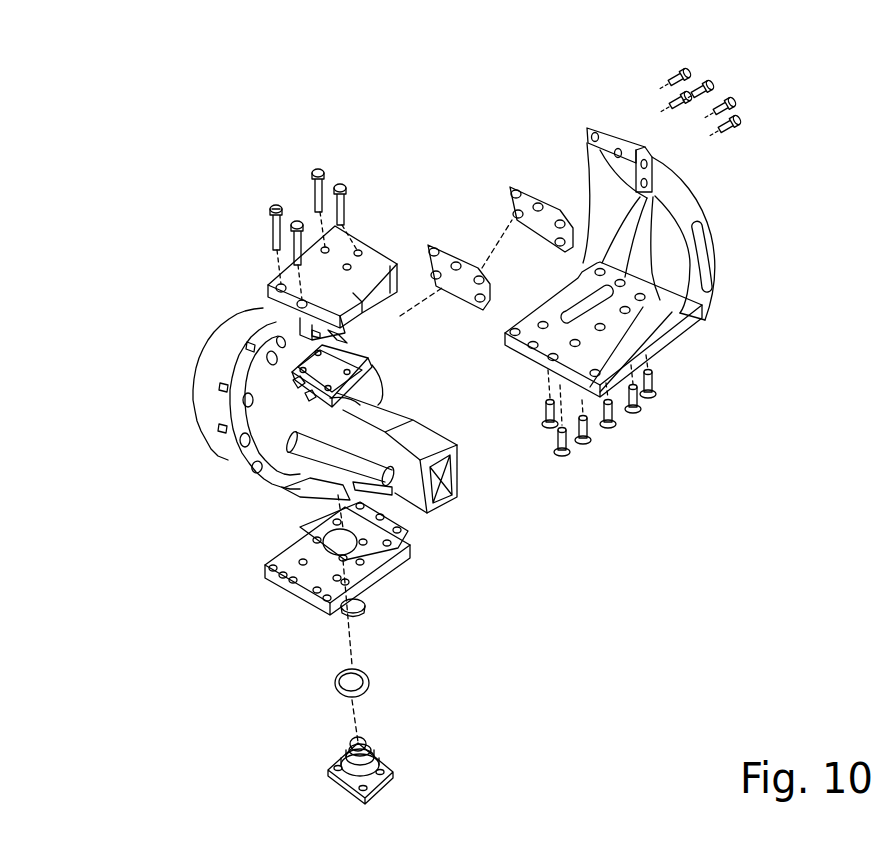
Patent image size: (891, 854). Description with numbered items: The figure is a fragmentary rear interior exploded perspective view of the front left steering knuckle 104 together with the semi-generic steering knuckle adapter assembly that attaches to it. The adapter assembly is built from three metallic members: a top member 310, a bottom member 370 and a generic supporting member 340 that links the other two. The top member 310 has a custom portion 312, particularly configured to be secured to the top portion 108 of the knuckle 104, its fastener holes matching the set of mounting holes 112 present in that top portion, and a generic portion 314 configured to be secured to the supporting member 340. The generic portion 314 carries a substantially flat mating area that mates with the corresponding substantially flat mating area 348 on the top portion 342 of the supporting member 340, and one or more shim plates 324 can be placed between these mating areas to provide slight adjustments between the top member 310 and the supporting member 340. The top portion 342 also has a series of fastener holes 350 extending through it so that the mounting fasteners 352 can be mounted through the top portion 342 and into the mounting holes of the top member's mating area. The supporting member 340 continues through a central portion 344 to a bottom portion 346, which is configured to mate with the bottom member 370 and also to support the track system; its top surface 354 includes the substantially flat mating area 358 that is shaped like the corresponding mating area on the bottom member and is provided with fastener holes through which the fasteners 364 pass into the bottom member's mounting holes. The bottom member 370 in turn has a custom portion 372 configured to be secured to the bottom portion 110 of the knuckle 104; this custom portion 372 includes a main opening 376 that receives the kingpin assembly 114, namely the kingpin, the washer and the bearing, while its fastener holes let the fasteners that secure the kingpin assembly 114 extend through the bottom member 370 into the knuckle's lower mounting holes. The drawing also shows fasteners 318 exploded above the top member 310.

The steering knuckle 104 is at (263, 418).
The top portion of the steering knuckle 108 is at (362, 354).
The bottom portion of the steering knuckle 110 is at (290, 497).
The mounting holes 112 is at (358, 346).
The kingpin assembly 114 is at (370, 597).
The top member 310 is at (232, 239).
The custom portion of the top member 312 is at (268, 294).
The generic portion of the top member 314 is at (402, 245).
The fasteners 318 is at (330, 155).
The shim plates 324 is at (515, 186).
The supporting member 340 is at (774, 319).
The top portion of the supporting member 342 is at (675, 165).
The central portion of the supporting member 344 is at (712, 212).
The bottom portion of the supporting member 346 is at (683, 340).
The mating area 348 is at (640, 178).
The fastener holes 350 is at (612, 170).
The mounting fasteners 352 is at (770, 118).
The top surface 354 is at (506, 354).
The mating area 358 is at (560, 320).
The fasteners 364 is at (558, 478).
The bottom member 370 is at (395, 582).
The custom portion of the bottom member 372 is at (300, 552).
The main opening 376 is at (390, 545).